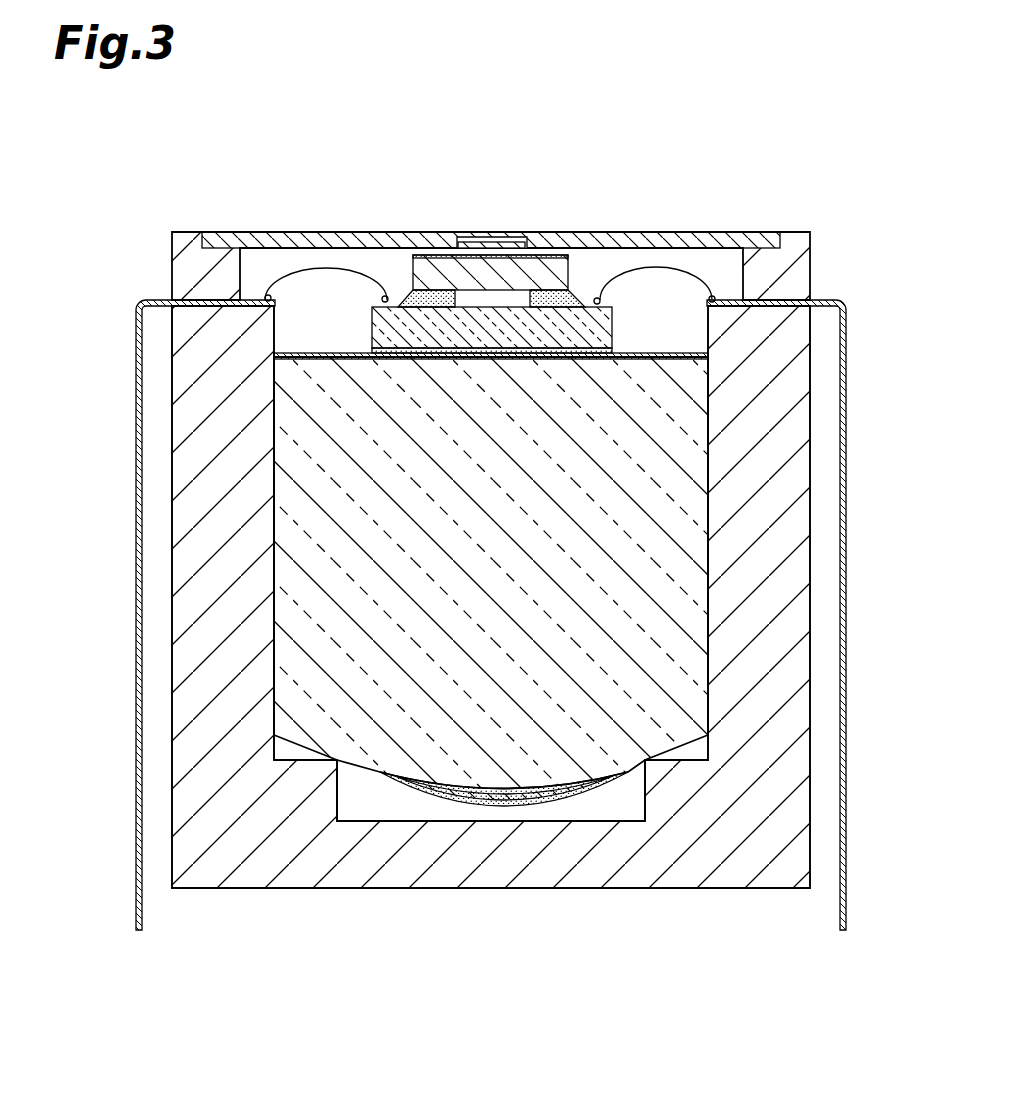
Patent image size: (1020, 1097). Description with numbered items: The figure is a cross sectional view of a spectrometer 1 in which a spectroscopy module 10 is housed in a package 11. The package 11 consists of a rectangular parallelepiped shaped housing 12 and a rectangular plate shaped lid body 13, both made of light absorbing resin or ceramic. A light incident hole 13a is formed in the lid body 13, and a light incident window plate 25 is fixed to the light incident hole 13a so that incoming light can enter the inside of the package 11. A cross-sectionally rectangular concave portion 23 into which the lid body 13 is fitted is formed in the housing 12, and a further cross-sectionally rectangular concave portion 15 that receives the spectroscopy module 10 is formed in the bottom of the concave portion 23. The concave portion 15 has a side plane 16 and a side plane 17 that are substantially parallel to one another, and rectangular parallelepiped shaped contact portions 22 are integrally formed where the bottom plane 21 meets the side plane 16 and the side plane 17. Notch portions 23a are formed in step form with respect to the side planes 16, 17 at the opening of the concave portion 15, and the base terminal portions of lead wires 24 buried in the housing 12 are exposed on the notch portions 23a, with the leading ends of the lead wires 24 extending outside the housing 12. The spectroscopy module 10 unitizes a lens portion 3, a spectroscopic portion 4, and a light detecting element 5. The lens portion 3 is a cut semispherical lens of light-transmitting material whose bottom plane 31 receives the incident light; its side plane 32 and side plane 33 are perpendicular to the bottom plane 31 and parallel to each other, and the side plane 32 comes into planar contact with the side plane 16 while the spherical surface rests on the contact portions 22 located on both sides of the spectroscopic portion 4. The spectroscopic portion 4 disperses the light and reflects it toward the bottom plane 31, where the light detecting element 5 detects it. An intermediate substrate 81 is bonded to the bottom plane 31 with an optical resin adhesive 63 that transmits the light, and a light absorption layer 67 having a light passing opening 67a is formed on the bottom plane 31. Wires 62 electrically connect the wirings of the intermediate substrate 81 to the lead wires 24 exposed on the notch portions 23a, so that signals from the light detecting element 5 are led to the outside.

The spectrometer 1 is at (500, 539).
The lens portion 3 is at (494, 573).
The spectroscopic portion 4 is at (510, 807).
The light detecting element 5 is at (560, 268).
The spectroscopy module 10 is at (498, 261).
The package 11 is at (544, 597).
The housing 12 is at (795, 726).
The lid body 13 is at (491, 194).
The light incident hole 13a is at (492, 236).
The concave portion 15 is at (708, 462).
The side plane 16 is at (282, 634).
The side plane 17 is at (708, 608).
The bottom plane 21 is at (440, 810).
The contact portions 22 is at (337, 790).
The concave portion 23 is at (492, 226).
The notch portions 23a is at (249, 234).
The lead wires 24 is at (134, 796).
The light incident window plate 25 is at (503, 240).
The bottom plane 31 is at (698, 349).
The side plane 32 is at (274, 530).
The side plane 33 is at (712, 531).
The wires 62 is at (690, 262).
The optical resin adhesive 63 is at (592, 350).
The light absorption layer 67 is at (494, 334).
The light passing opening 67a is at (336, 331).
The intermediate substrate 81 is at (522, 266).